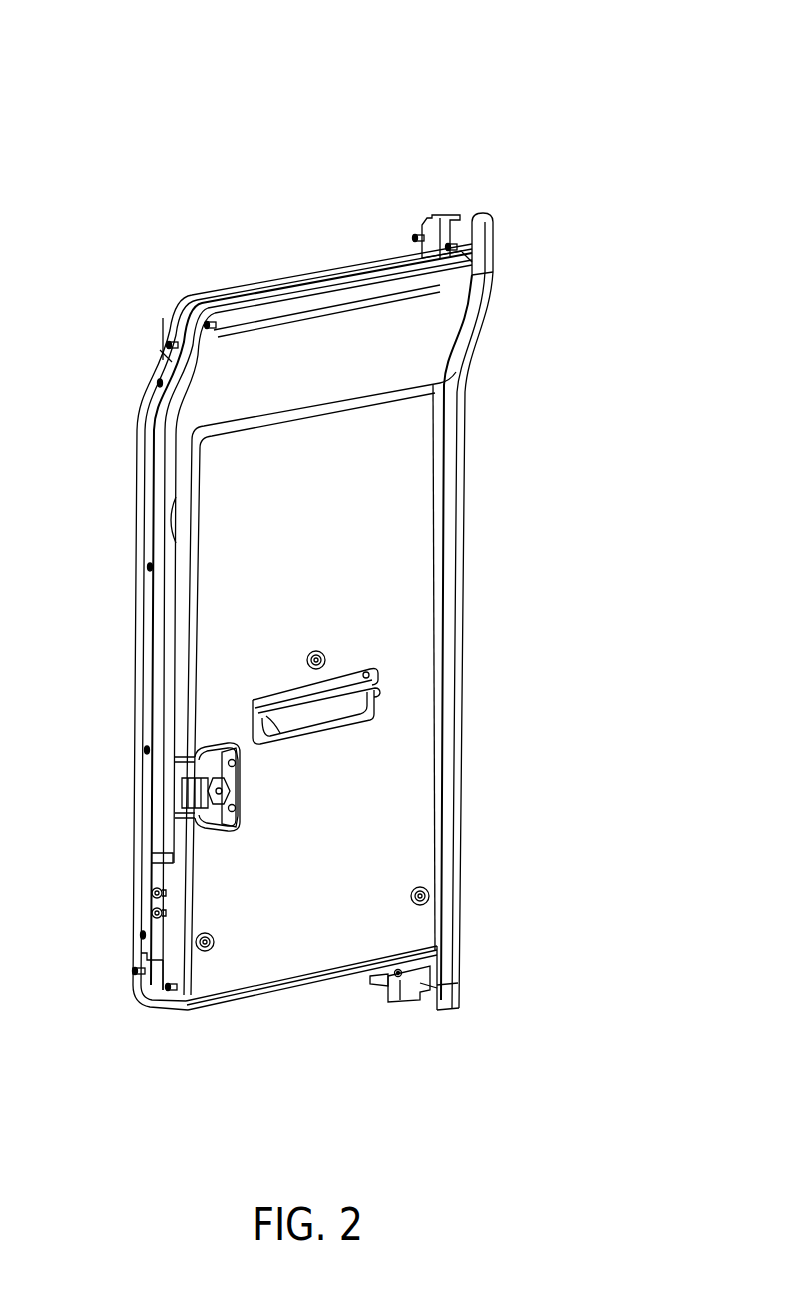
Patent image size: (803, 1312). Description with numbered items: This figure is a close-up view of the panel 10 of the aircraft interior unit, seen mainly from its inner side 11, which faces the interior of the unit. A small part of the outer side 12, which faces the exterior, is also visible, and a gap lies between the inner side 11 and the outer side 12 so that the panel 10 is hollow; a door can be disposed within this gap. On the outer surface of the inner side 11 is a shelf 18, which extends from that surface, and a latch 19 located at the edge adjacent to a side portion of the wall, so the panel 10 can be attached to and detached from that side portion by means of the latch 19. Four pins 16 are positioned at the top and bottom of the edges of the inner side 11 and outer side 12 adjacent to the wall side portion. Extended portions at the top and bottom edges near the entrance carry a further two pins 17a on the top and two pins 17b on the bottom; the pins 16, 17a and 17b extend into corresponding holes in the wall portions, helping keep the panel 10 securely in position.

The panel 10 is at (608, 116).
The inner side 11 is at (187, 687).
The outer side 12 is at (153, 581).
The pins 16 is at (208, 323).
The pins 17a is at (450, 244).
The pins 17b is at (398, 988).
The shelf 18 is at (378, 689).
The latch 19 is at (187, 793).